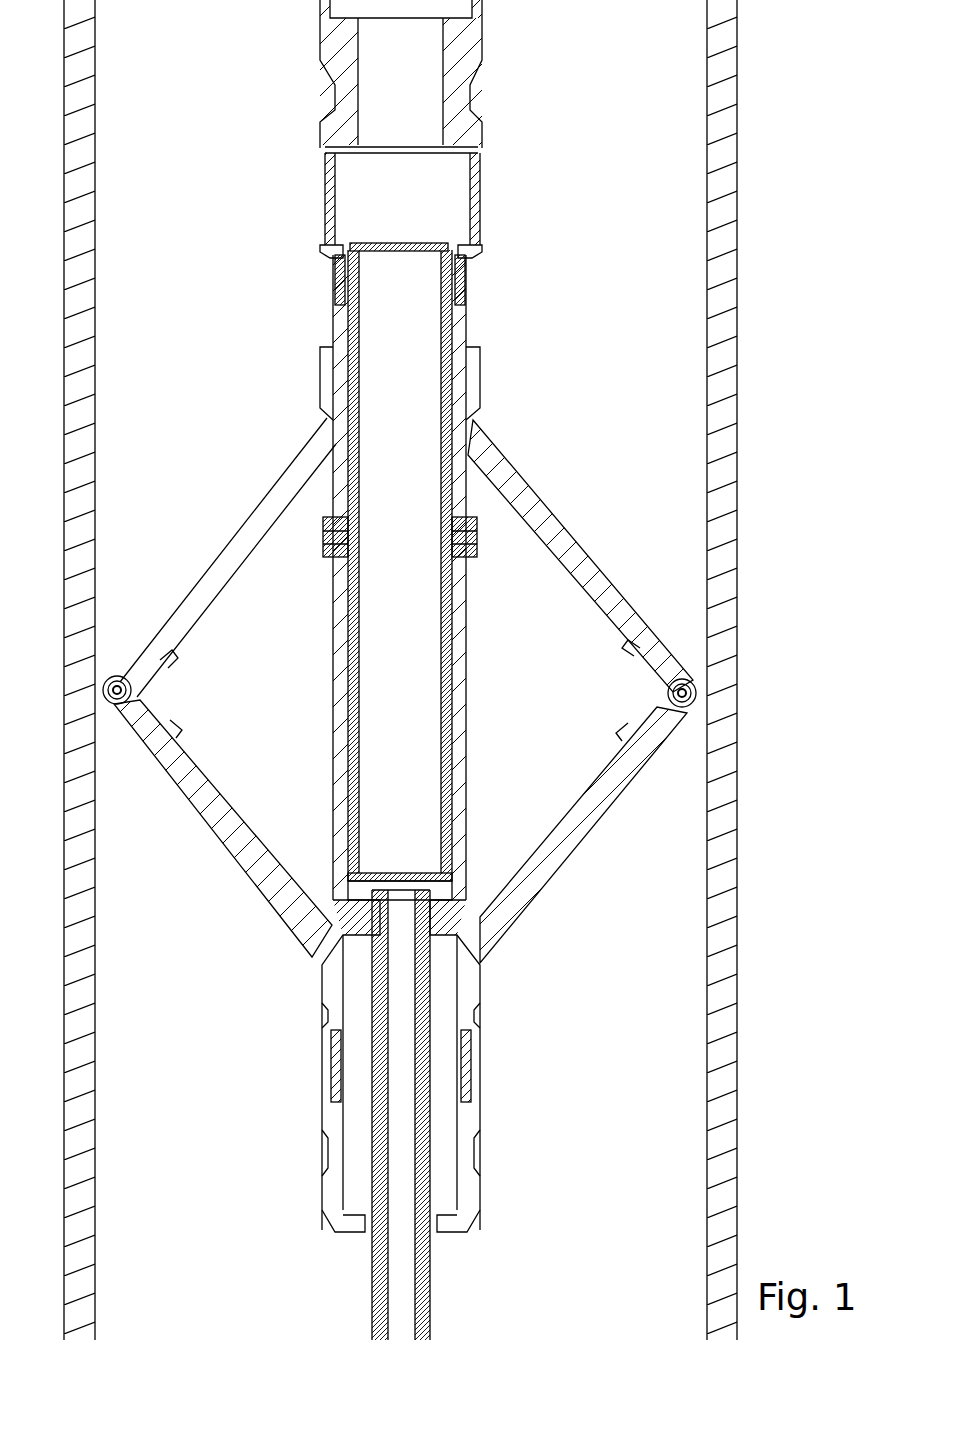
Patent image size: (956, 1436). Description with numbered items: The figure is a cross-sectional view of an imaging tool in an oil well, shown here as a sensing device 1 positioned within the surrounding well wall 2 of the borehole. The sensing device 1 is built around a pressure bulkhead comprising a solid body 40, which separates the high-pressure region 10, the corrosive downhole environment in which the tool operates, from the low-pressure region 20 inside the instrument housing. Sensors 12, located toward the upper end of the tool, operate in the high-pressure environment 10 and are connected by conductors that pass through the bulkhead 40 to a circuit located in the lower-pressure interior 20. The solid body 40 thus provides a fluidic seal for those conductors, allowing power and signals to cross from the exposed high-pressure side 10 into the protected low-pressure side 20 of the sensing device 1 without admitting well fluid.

The sensing device 1 is at (340, 398).
The casing / wellbore wall 2 is at (727, 972).
The high-pressure region 10 is at (617, 449).
The sensors 12 is at (327, 68).
The low-pressure region 20 is at (419, 509).
The solid body of the pressure bulkhead 40 is at (400, 200).